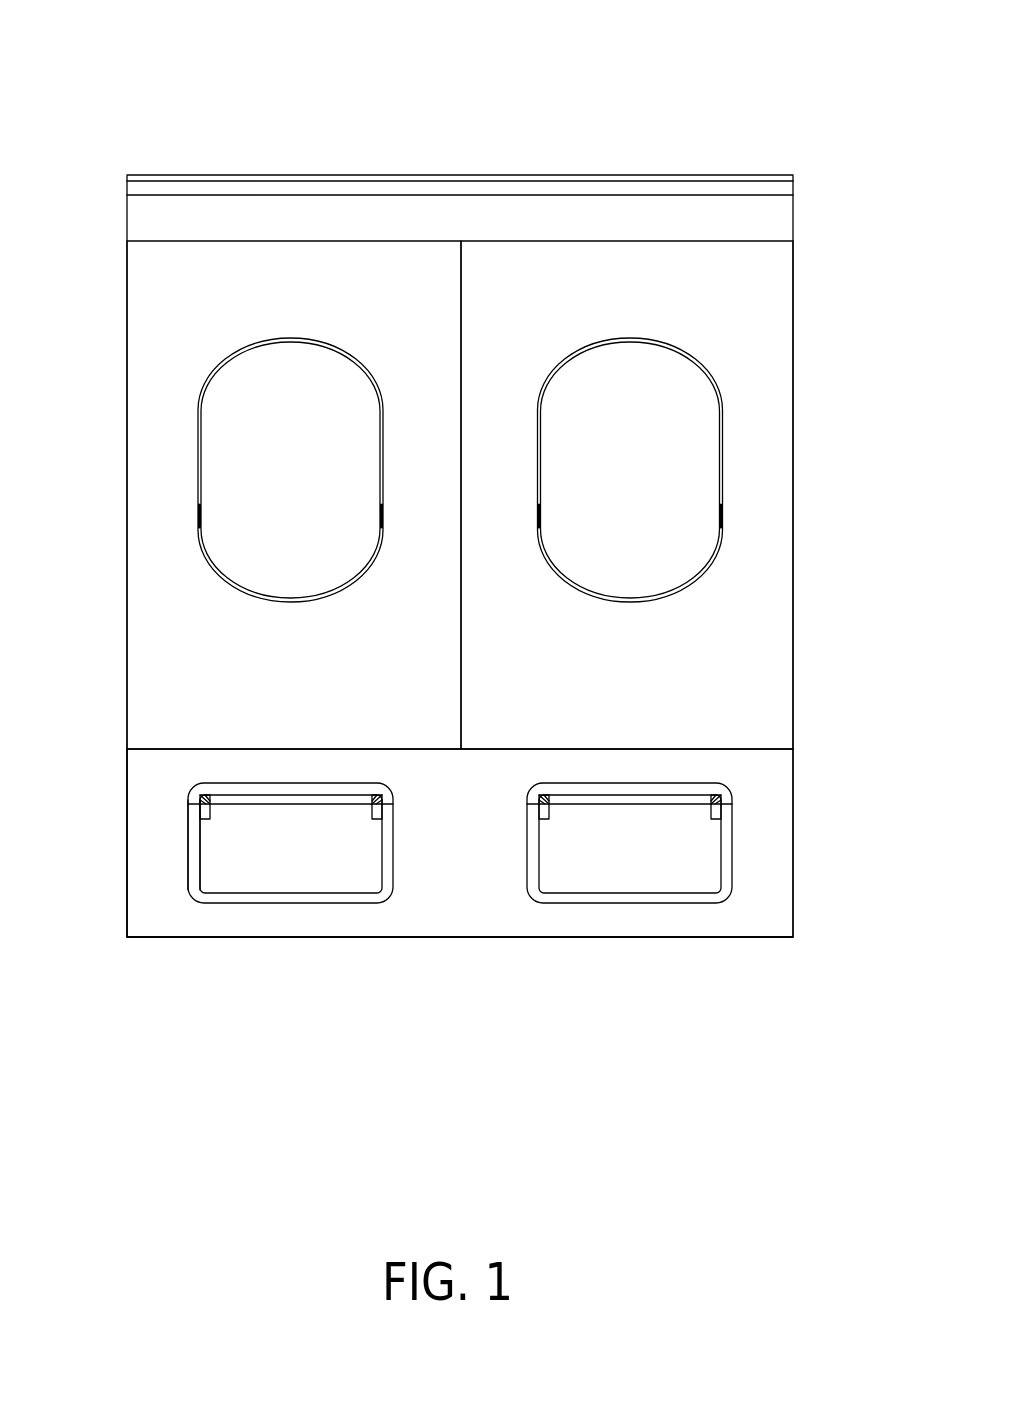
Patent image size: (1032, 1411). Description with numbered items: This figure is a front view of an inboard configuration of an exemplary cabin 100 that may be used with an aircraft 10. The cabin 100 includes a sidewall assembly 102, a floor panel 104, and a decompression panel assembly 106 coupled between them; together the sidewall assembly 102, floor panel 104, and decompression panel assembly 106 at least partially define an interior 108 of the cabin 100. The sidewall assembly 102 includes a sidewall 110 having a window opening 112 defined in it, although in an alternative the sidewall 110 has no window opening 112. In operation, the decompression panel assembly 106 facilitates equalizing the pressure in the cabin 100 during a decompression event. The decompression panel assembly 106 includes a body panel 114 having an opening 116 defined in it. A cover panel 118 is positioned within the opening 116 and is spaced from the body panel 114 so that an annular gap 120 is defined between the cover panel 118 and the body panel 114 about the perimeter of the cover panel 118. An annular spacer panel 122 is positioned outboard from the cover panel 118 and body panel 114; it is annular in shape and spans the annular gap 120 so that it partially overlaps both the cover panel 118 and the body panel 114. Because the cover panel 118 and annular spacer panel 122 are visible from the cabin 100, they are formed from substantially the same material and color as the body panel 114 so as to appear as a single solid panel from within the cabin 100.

The aircraft 10 is at (861, 88).
The cabin 100 is at (826, 218).
The sidewall assembly 102 is at (833, 613).
The floor panel 104 is at (775, 938).
The decompression panel assembly 106 is at (773, 764).
The interior 108 is at (762, 538).
The sidewall 110 is at (748, 352).
The window opening 112 is at (665, 457).
The body panel 114 is at (135, 837).
The opening 116 is at (190, 812).
The cover panel 118 is at (220, 847).
The annular gap 120 is at (188, 884).
The annular spacer panel 122 is at (242, 902).